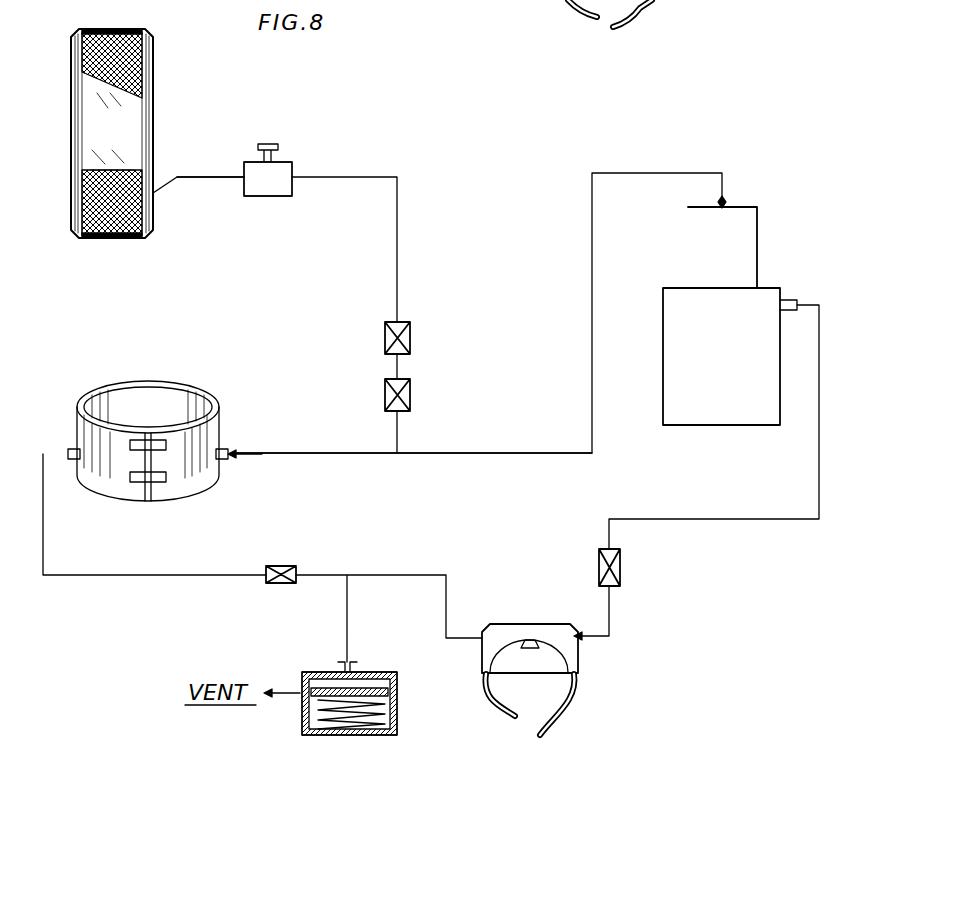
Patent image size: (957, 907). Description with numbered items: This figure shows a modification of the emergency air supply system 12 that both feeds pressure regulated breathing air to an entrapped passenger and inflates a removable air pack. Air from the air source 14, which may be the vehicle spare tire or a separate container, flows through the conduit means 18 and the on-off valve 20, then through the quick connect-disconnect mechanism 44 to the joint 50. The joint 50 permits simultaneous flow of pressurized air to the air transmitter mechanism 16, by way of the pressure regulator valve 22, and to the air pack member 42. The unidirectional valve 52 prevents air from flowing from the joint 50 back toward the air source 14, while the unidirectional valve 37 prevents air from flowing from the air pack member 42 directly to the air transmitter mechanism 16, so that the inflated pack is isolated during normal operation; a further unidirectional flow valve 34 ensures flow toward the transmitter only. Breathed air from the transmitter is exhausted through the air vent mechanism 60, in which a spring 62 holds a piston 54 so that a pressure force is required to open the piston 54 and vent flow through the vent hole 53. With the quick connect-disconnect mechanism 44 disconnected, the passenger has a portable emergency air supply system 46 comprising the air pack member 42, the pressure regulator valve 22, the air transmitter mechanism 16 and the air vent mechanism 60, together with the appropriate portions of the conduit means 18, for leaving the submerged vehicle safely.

The air source 14 is at (166, 85).
The emergency air supply system 12 is at (294, 146).
The conduit means 18 is at (192, 177).
The on-off valve 20 is at (268, 188).
The quick connect-disconnect mechanism 44 is at (412, 336).
The unidirectional valve 52 is at (412, 392).
The joint 50 is at (397, 455).
The pressure regulator valve 22 is at (732, 368).
The portable emergency air supply system 46 is at (107, 368).
The air pack member 42 is at (186, 368).
The unidirectional valve 37 is at (297, 525).
The air vent mechanism 60 is at (307, 664).
The piston 54 is at (363, 688).
The vent hole 53 is at (300, 695).
The spring 62 is at (345, 716).
The unidirectional flow valve 34 is at (598, 568).
The air transmitter mechanism 16 is at (570, 655).